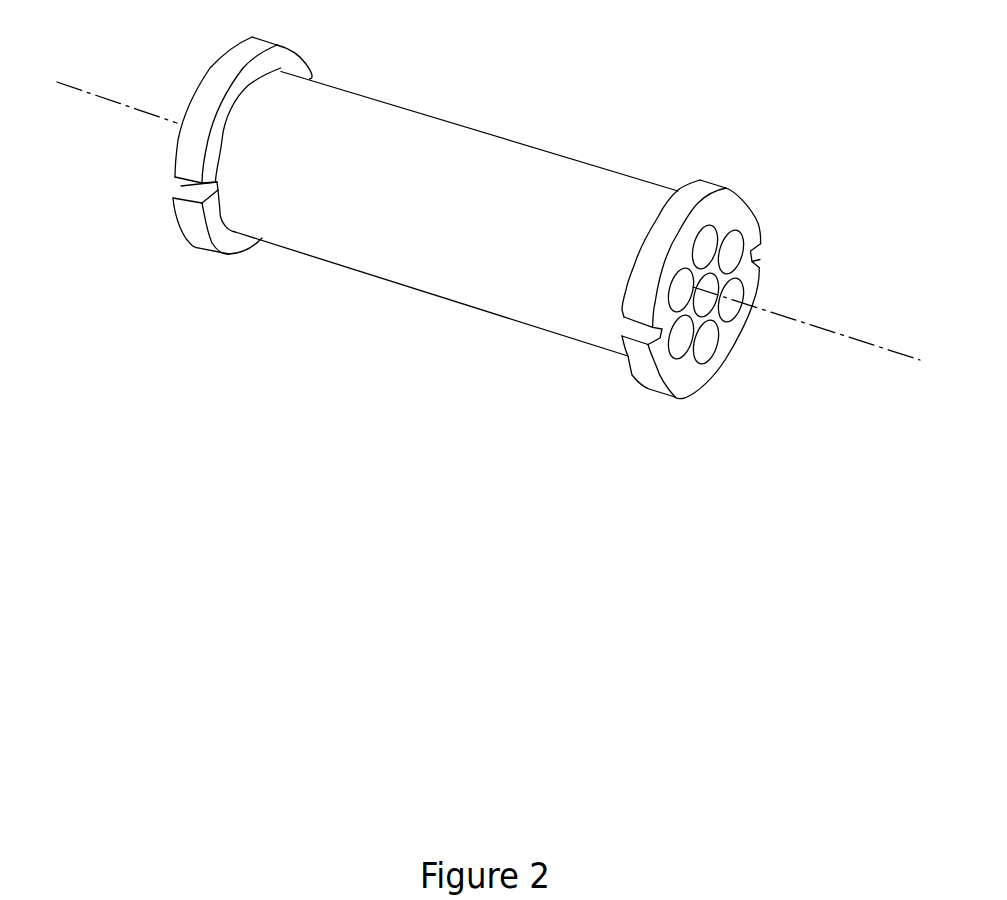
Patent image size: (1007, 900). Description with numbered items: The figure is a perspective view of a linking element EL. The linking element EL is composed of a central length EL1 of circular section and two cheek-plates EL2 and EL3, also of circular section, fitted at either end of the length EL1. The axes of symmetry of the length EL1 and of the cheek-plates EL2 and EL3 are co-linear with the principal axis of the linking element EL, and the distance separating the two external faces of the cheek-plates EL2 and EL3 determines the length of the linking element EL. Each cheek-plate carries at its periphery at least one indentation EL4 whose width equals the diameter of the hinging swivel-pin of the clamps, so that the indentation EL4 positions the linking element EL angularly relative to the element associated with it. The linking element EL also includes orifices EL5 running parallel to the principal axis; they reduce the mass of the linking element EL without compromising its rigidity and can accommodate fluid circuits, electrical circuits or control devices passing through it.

The linking element EL is at (482, 247).
The length EL1 is at (425, 295).
The cheek-plate EL2 is at (700, 313).
The cheek-plate EL3 is at (192, 232).
The indentation EL4 is at (764, 248).
The orifices EL5 is at (705, 345).